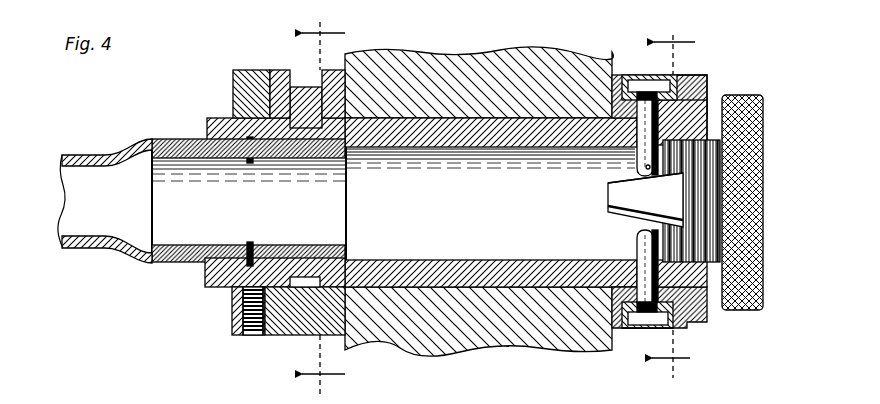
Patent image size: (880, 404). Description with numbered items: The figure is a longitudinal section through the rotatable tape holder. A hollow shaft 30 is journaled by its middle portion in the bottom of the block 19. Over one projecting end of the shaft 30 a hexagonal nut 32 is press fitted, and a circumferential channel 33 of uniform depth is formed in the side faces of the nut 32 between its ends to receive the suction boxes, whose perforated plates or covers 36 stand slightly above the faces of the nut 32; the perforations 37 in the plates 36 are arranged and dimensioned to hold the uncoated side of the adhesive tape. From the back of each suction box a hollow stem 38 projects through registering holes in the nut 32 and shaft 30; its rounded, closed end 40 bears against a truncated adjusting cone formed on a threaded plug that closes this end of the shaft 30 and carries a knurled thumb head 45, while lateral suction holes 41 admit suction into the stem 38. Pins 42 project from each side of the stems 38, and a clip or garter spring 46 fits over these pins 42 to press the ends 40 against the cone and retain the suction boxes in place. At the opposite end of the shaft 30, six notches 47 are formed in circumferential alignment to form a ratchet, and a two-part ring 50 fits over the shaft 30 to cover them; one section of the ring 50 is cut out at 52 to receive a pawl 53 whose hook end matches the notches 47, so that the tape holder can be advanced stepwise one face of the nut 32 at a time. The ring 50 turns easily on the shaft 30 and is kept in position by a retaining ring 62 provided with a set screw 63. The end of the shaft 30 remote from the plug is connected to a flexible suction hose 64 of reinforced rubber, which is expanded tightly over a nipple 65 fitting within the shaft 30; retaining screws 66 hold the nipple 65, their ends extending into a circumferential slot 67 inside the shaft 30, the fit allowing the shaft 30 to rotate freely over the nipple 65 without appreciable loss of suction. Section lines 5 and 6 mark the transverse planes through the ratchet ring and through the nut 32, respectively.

The block 19 is at (476, 345).
The hollow shaft 30 is at (470, 260).
The hexagonal nut 32 is at (683, 100).
The circumferential channel 33 is at (625, 75).
The perforated plate 36 is at (647, 75).
The perforations 37 is at (655, 328).
The hollow stem 38 is at (636, 250).
The rounded end 40 is at (607, 203).
The lateral suction holes 41 is at (712, 182).
The pin 42 is at (640, 192).
The knurled thumb head 45 is at (764, 197).
The garter spring 46 is at (707, 80).
The notches 47 is at (302, 130).
The two-part ring 50 is at (283, 335).
The cut out 52 is at (323, 70).
The pawl 53 is at (258, 70).
The retaining ring 62 is at (233, 85).
The set screw 63 is at (232, 322).
The suction hose 64 is at (82, 155).
The nipple 65 is at (180, 263).
The retaining screws 66 is at (248, 242).
The circumferential slot 67 is at (282, 253).
The section line 5 is at (323, 203).
The section line 6 is at (673, 207).